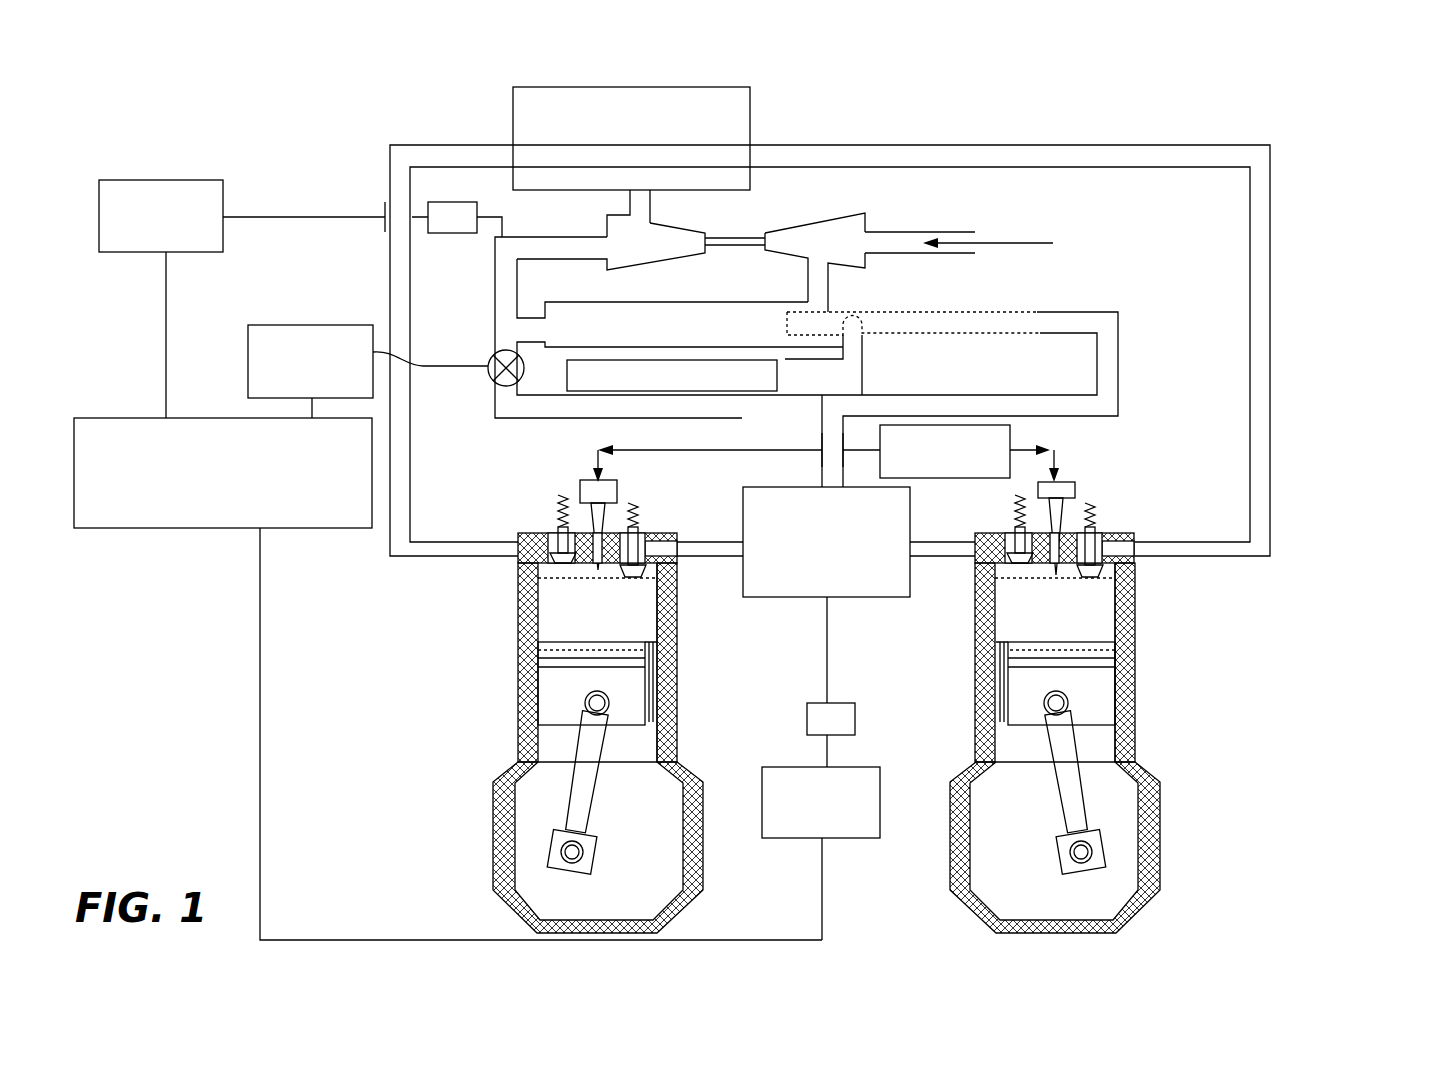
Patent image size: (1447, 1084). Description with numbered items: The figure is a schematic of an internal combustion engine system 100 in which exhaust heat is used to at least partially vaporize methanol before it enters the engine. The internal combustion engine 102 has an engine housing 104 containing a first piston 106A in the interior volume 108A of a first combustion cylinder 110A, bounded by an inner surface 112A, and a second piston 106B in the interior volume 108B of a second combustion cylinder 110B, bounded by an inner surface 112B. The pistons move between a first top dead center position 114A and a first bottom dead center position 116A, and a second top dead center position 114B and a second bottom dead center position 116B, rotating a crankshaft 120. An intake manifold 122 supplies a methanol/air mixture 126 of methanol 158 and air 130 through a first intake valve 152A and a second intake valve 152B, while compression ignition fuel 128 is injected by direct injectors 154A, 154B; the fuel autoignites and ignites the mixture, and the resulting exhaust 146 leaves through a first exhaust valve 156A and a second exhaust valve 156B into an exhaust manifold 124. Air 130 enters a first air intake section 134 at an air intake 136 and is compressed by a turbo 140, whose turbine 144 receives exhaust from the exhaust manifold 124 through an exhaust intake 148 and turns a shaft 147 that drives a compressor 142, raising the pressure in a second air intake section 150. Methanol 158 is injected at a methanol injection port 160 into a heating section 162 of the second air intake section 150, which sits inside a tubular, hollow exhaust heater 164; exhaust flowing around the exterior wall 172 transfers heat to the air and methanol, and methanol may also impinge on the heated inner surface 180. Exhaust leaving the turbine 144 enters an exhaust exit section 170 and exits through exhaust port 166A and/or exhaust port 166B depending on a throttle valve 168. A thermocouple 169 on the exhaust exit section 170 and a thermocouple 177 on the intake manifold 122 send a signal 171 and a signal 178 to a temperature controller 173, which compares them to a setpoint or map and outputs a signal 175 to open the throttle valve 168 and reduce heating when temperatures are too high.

The internal combustion engine system 100 is at (1354, 102).
The internal combustion engine 102 is at (1257, 588).
The engine housing 104 is at (693, 771).
The first piston 106A is at (650, 690).
The second piston 106B is at (1005, 700).
The interior volume 108A is at (552, 626).
The interior volume 108B is at (1012, 609).
The first combustion cylinder 110A is at (668, 600).
The second combustion cylinder 110B is at (1115, 604).
The inner surface 112A is at (672, 625).
The inner surface 112B is at (1140, 623).
The first top dead center position 114A is at (613, 578).
The second top dead center position 114B is at (1010, 580).
The first bottom dead center position 116A is at (537, 655).
The second bottom dead center position 116B is at (1140, 705).
The crankshaft 120 is at (572, 850).
The intake manifold 122 is at (826, 542).
The exhaust manifold 124 is at (631, 138).
The methanol/air mixture 126 is at (957, 397).
The compression ignition fuel 128 is at (826, 453).
The air 130 is at (1012, 223).
The first air intake section 134 is at (885, 232).
The air intake 136 is at (1012, 203).
The turbo 140 is at (762, 194).
The compressor 142 is at (815, 225).
The turbine 144 is at (605, 215).
The exhaust 146 is at (580, 167).
The shaft 147 is at (755, 220).
The exhaust intake 148 is at (626, 200).
The second air intake section 150 is at (1112, 302).
The first intake valve 152A is at (642, 533).
The second intake valve 152B is at (1017, 530).
The direct injector 154A is at (578, 482).
The direct injector 154B is at (1076, 485).
The first exhaust valve 156A is at (548, 533).
The second exhaust valve 156B is at (1097, 535).
The methanol 158 is at (672, 375).
The methanol injection port 160 is at (812, 323).
The heating section 162 is at (958, 303).
The exhaust heater 164 is at (580, 302).
The exhaust port 166A is at (1063, 290).
The exhaust port 166B is at (742, 418).
The throttle valve 168 is at (490, 355).
The thermocouple 169 is at (425, 204).
The exhaust exit section 170 is at (495, 258).
The signal 171 is at (242, 299).
The exterior wall 172 is at (857, 312).
The temperature controller 173 is at (448, 679).
The signal 175 is at (368, 371).
The thermocouple 177 is at (855, 720).
The signal 178 is at (821, 853).
The inner surface 180 is at (957, 335).